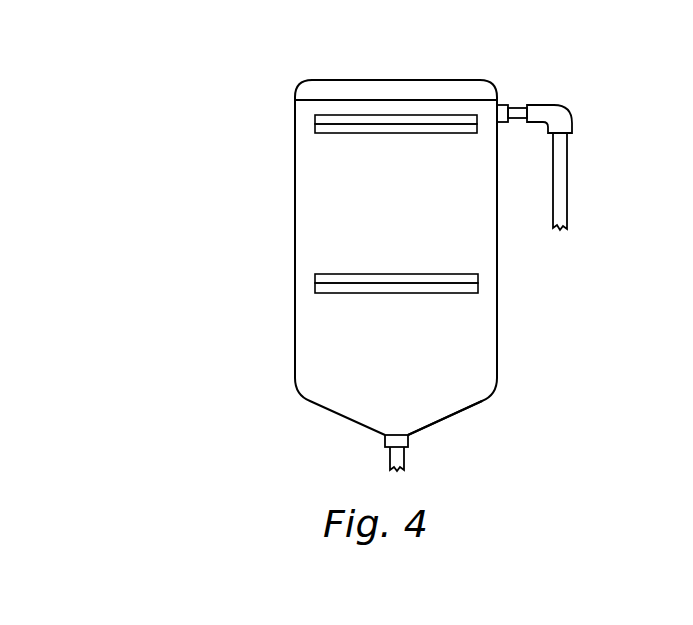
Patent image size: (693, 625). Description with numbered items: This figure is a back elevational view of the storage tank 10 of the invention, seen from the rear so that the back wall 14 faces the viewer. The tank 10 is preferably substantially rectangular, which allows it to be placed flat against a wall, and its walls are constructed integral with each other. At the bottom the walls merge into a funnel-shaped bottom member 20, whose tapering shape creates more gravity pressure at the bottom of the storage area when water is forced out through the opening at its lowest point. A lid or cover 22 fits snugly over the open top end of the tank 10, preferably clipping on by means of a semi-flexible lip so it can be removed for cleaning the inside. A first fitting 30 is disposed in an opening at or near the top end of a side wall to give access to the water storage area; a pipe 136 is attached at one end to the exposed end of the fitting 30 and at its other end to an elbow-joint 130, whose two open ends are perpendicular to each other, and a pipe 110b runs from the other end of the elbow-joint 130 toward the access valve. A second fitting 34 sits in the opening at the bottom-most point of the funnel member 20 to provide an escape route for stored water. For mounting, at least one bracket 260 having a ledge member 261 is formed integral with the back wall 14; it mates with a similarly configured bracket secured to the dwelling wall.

The storage tank 10 is at (242, 295).
The back wall 14 is at (313, 220).
The funnel-shaped bottom member 20 is at (445, 412).
The lid or cover 22 is at (330, 93).
The first fitting 30 is at (503, 103).
The second fitting 34 is at (385, 443).
The elbow-joint 130 is at (582, 113).
The pipe 136 is at (515, 108).
The pipe 110b is at (567, 197).
The bracket 260 is at (315, 130).
The ledge member 261 is at (315, 118).